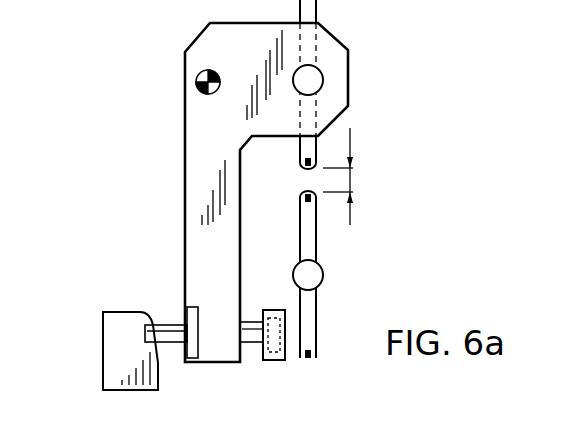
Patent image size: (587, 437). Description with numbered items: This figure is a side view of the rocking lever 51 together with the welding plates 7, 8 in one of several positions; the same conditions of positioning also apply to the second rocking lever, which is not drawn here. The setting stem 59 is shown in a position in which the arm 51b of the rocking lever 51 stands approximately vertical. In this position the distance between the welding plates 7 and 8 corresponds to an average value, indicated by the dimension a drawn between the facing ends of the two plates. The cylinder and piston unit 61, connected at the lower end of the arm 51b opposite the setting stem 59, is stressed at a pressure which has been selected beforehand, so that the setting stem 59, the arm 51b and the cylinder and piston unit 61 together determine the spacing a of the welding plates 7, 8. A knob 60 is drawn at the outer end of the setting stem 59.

The rocking lever 51 is at (350, 82).
The arm 51b is at (200, 153).
The welding plate 7 is at (299, 163).
The welding plate 8 is at (300, 201).
The distance between the welding plates a is at (337, 177).
The setting stem 59 is at (167, 325).
The knob 60 is at (108, 343).
The cylinder and piston unit 61 is at (263, 305).